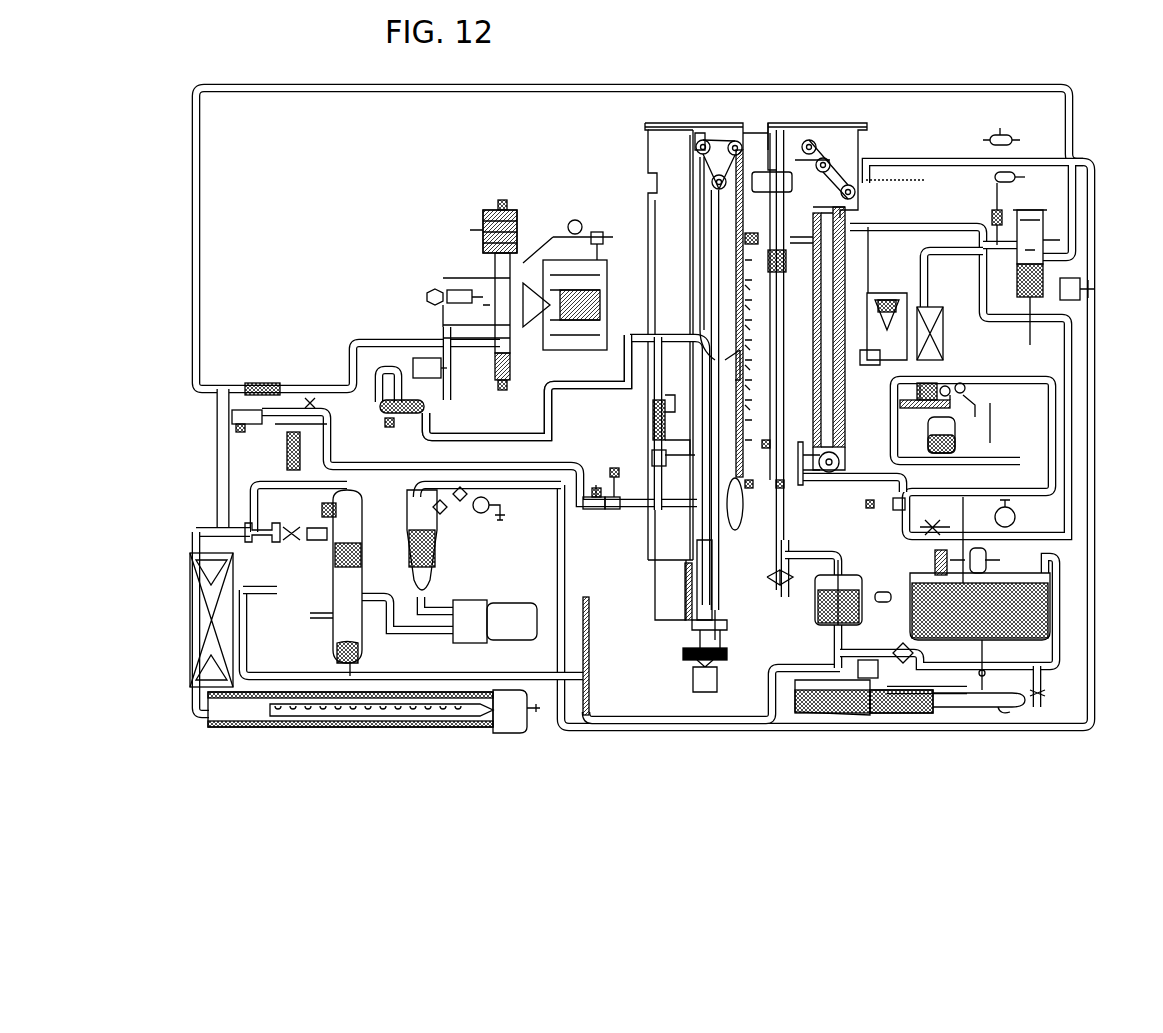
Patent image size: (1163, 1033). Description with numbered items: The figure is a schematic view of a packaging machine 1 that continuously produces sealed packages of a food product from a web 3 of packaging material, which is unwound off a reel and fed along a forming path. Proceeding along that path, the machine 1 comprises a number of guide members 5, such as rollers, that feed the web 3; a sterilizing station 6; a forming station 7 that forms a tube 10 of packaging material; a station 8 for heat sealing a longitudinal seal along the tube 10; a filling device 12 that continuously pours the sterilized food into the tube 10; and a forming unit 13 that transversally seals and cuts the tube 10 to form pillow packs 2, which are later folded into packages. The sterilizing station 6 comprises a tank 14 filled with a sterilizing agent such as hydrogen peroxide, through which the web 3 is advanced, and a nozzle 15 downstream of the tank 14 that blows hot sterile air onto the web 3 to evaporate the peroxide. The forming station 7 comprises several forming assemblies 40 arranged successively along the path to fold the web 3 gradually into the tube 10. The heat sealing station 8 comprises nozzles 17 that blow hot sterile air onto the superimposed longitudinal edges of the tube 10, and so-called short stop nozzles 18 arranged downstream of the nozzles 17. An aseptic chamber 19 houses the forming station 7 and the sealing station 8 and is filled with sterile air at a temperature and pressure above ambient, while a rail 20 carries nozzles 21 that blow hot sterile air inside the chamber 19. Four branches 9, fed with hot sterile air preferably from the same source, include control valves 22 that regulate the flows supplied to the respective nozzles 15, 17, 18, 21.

The packaging machine 1 is at (126, 84).
The pillow packs 2 is at (695, 672).
The web 3 is at (900, 185).
The guide members 5 is at (730, 140).
The sterilizing station 6 is at (880, 278).
The forming station 7 is at (722, 262).
The station for heat sealing 8 is at (634, 380).
The branches 9 is at (630, 508).
The tube 10 is at (684, 300).
The filling device 12 is at (650, 330).
The forming unit 13 is at (760, 640).
The tank 14 is at (812, 478).
The nozzle 15 is at (800, 128).
The nozzles 17 is at (655, 430).
The short stop nozzles 18 is at (672, 500).
The aseptic chamber 19 is at (655, 135).
The rail 20 is at (718, 540).
The nozzles 21 is at (742, 362).
The control valves 22 is at (614, 510).
The forming assemblies 40 is at (708, 202).